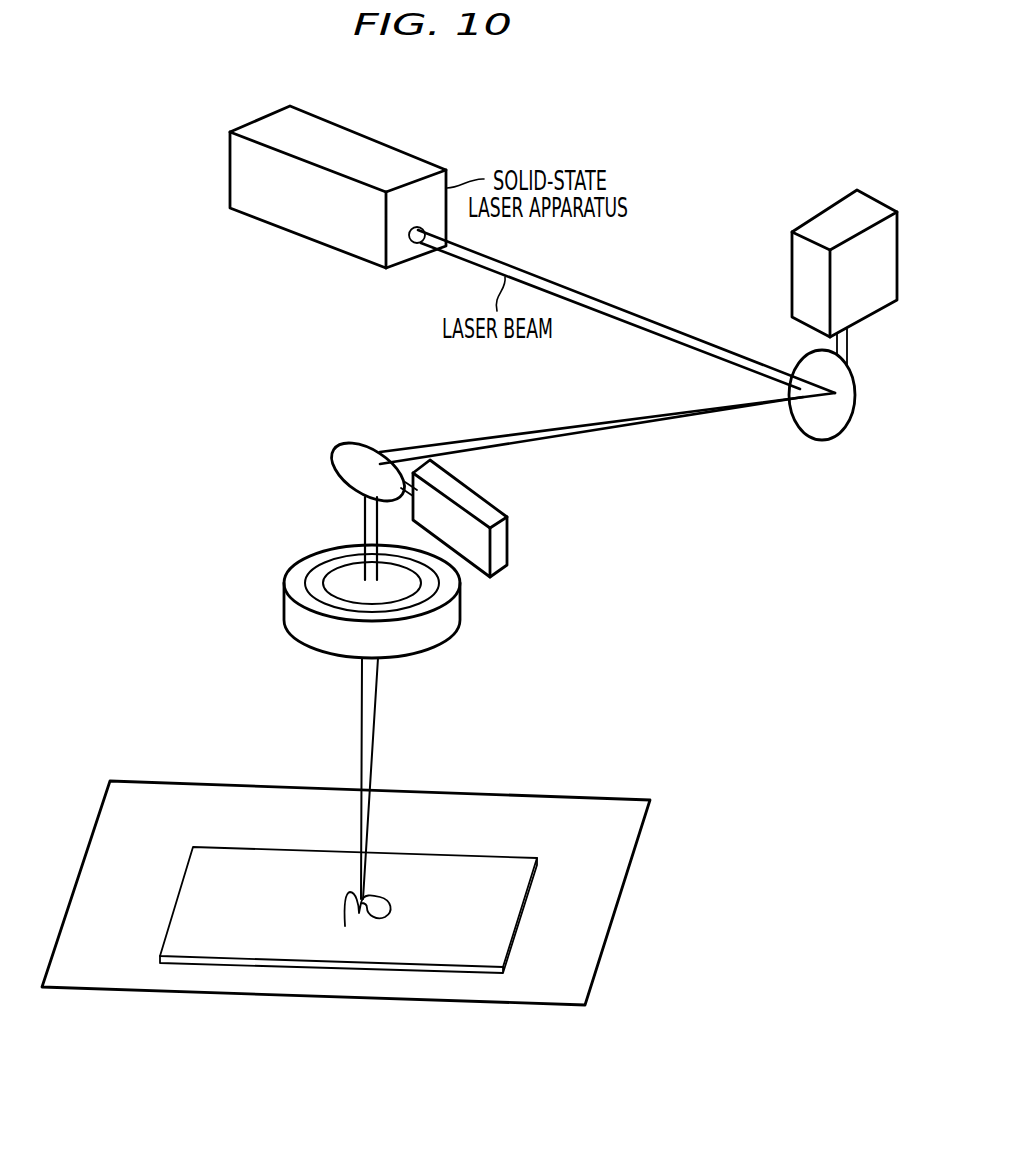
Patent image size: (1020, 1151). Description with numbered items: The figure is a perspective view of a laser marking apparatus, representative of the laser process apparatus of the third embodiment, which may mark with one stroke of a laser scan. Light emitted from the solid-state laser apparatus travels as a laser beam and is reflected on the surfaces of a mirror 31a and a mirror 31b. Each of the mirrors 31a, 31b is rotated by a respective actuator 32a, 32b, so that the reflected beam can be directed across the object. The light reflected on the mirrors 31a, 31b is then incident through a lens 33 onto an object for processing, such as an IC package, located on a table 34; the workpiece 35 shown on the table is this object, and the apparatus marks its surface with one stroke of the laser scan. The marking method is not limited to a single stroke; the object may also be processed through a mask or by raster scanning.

The mirror 31a is at (823, 442).
The mirror 31b is at (333, 452).
The actuator 32a is at (818, 210).
The actuator 32b is at (508, 538).
The lens 33 is at (283, 606).
The table 34 is at (608, 935).
The workpiece 35 is at (532, 877).